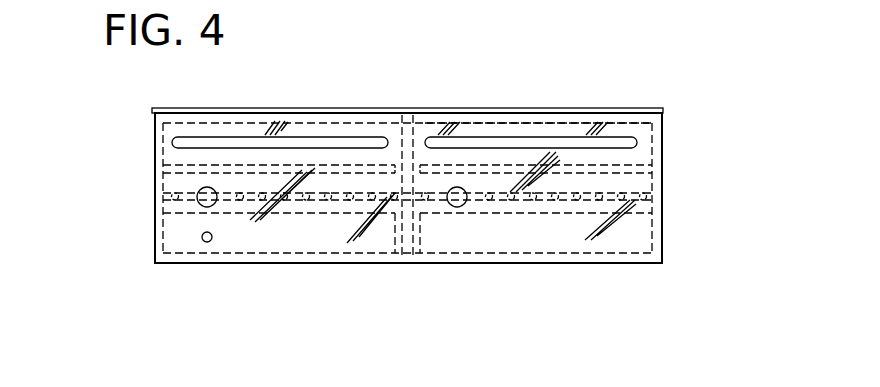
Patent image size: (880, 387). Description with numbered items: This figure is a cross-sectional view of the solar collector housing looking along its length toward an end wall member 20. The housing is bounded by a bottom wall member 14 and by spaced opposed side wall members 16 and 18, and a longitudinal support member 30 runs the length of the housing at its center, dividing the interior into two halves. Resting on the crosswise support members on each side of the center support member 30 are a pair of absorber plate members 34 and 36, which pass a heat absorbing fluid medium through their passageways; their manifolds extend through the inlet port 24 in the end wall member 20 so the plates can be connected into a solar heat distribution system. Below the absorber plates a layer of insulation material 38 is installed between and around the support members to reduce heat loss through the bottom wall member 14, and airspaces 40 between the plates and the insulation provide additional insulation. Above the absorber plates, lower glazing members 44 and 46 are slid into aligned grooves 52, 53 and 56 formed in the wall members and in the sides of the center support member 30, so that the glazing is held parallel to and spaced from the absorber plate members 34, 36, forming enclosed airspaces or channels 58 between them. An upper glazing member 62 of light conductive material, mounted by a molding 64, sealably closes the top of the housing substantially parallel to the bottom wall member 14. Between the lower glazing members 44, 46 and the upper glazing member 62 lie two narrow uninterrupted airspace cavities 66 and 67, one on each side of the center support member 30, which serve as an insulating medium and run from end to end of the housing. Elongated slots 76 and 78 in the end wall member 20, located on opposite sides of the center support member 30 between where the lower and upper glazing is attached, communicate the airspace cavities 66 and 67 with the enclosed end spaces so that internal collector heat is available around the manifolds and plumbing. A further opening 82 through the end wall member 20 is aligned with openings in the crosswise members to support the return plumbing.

The bottom wall member 14 is at (632, 259).
The side wall member 16 is at (152, 253).
The side wall member 18 is at (655, 234).
The end wall member 20 is at (570, 118).
The inlet port 24 is at (215, 206).
The longitudinal support member 30 is at (402, 260).
The absorber plate member 34 is at (336, 200).
The absorber plate member 36 is at (565, 200).
The insulation material 38 is at (443, 232).
The airspaces 40 is at (310, 205).
The lower glazing member 44 is at (237, 172).
The lower glazing member 46 is at (478, 118).
The groove 52 is at (153, 168).
The groove 53 is at (645, 170).
The groove 56 is at (428, 117).
The enclosed airspaces or channels 58 is at (155, 188).
The upper glazing member 62 is at (318, 118).
The molding 64 is at (530, 113).
The airspace cavity 66 is at (640, 133).
The airspace cavity 67 is at (153, 128).
The slot 76 is at (193, 140).
The slot 78 is at (605, 143).
The opening 82 is at (213, 241).